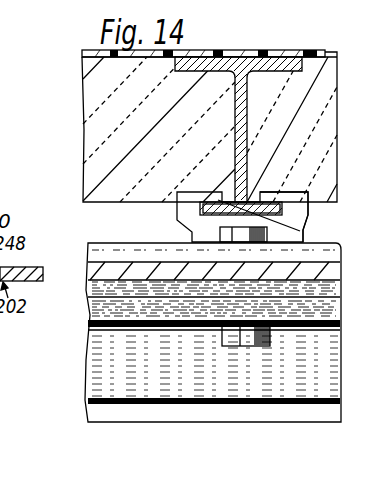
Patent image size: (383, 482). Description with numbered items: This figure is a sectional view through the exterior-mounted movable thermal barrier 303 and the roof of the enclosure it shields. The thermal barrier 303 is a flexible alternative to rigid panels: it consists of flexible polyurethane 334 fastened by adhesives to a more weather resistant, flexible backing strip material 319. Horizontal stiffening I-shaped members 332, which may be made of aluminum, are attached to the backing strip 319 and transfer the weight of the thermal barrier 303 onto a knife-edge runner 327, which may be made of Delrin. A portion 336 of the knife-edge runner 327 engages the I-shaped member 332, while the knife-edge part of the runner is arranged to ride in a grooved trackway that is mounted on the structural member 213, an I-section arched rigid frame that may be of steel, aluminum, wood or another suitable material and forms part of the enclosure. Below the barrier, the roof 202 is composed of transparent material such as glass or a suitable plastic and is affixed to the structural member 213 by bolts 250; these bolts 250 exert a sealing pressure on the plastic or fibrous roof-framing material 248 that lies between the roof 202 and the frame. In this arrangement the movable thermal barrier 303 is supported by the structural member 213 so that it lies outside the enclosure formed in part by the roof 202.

The flexible backing strip material 319 is at (82, 54).
The flexible polyurethane 334 is at (86, 100).
The movable thermal barrier 303 is at (82, 146).
The I-shaped stiffening member 332 is at (250, 56).
The knife-edge runner 327 is at (224, 217).
The portion of knife-edge runner 336 is at (296, 194).
The roof-framing material 248 is at (88, 246).
The roof 202 is at (87, 271).
The structural member 213 is at (115, 400).
The bolt 250 is at (262, 346).